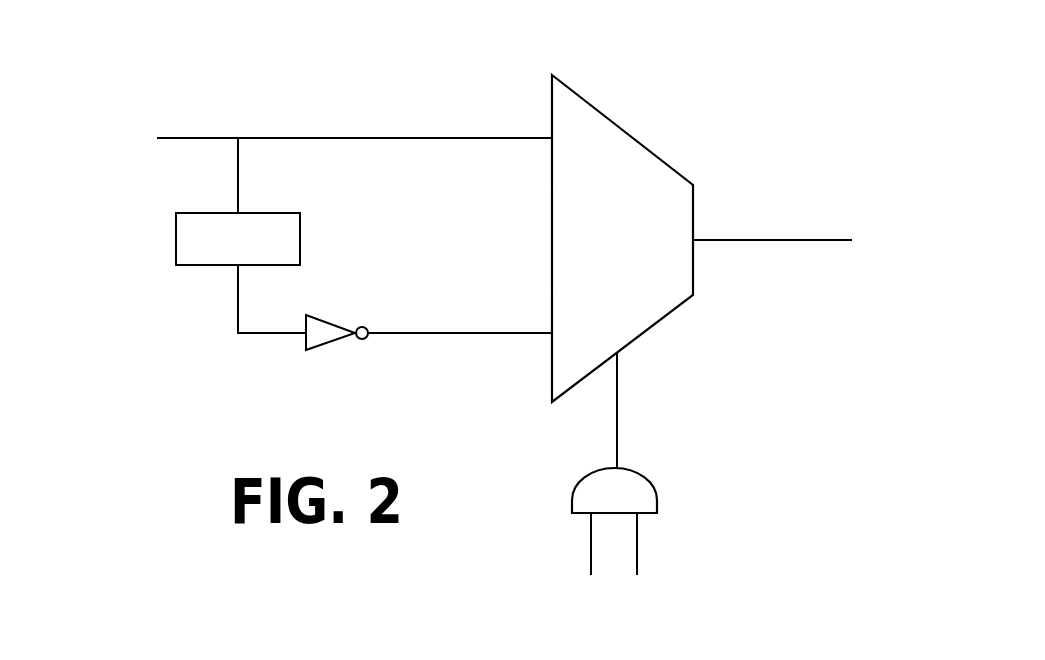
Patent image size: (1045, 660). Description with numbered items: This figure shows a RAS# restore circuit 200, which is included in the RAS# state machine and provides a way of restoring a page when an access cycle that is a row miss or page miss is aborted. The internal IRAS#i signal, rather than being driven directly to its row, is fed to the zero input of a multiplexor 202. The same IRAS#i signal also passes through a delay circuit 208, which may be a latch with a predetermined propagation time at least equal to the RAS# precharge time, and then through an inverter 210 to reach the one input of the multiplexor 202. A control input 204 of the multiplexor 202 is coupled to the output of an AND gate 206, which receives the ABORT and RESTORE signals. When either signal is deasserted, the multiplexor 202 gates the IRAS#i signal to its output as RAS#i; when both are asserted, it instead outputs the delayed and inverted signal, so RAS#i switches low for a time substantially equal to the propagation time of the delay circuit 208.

The RAS# restore circuit 200 is at (358, 52).
The multiplexor 202 is at (656, 297).
The control input 204 is at (619, 355).
The AND gate 206 is at (645, 482).
The delay circuit 208 is at (300, 233).
The inverter 210 is at (335, 323).